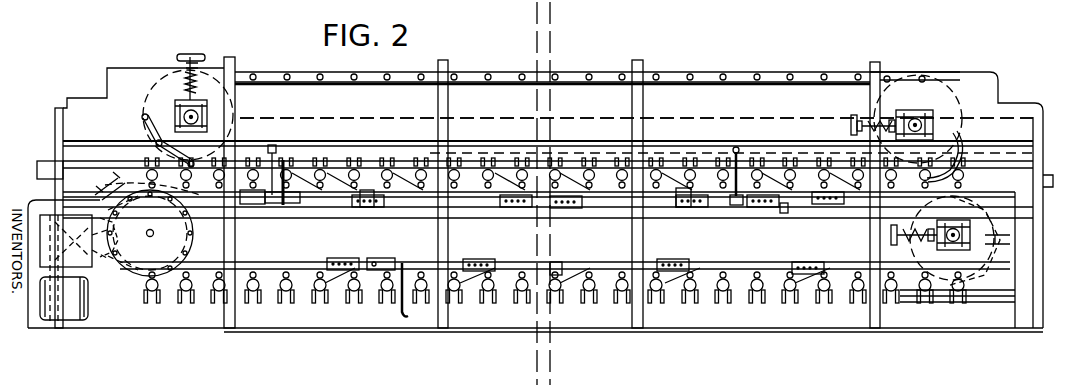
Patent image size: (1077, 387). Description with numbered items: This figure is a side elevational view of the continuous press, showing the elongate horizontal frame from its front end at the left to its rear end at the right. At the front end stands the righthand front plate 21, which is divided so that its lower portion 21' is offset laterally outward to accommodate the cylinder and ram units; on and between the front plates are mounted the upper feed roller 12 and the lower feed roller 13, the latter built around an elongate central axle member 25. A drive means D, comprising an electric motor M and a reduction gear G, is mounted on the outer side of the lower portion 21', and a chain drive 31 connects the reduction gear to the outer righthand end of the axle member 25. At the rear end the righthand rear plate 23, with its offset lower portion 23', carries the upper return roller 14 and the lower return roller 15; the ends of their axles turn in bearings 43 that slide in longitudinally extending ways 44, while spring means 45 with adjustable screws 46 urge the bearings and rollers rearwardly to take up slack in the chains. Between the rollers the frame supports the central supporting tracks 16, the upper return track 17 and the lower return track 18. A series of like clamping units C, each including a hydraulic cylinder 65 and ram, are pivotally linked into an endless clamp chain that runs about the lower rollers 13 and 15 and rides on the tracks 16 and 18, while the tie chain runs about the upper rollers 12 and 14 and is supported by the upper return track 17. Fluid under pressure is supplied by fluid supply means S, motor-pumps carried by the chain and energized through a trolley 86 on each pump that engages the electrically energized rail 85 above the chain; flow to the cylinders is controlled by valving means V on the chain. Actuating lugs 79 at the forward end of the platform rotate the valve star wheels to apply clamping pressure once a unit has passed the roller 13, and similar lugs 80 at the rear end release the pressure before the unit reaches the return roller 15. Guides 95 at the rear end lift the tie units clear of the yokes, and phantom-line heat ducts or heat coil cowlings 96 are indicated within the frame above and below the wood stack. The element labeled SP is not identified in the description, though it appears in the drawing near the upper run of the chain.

The righthand front plate 21 is at (141, 82).
The upper feed roller 12 is at (232, 97).
The trolley 86 is at (253, 147).
The electrically energized rail 85 is at (300, 146).
The cylinder 65 is at (358, 175).
The upper return track 17 is at (486, 86).
The heat ducts or heat coil cowlings 96 is at (662, 119).
The ways 44 is at (899, 110).
The upper return roller 14 is at (936, 74).
The righthand rear plate 23 is at (961, 192).
The bearings 43 is at (960, 122).
The spring means 45 is at (878, 118).
The adjustable screws 46 is at (849, 117).
The guides 95 is at (950, 178).
The lower return roller 15 is at (976, 191).
The chain drive 31 is at (94, 205).
The reduction gear G is at (42, 222).
The axle member 25 is at (160, 222).
The lower feed roller 13 is at (164, 233).
The actuating lugs 79 is at (251, 206).
The fluid supply means S is at (295, 212).
The valving means V is at (689, 238).
The central supporting tracks 16 is at (478, 200).
The clamping unit C is at (313, 300).
The spray SP is at (757, 207).
The lugs 80 is at (786, 206).
The drive means D is at (114, 280).
The lower return track 18 is at (600, 285).
The electric motor M is at (37, 322).
The lower portion of righthand front plate 21' is at (138, 328).
The lower portion of righthand rear plate 23' is at (987, 339).